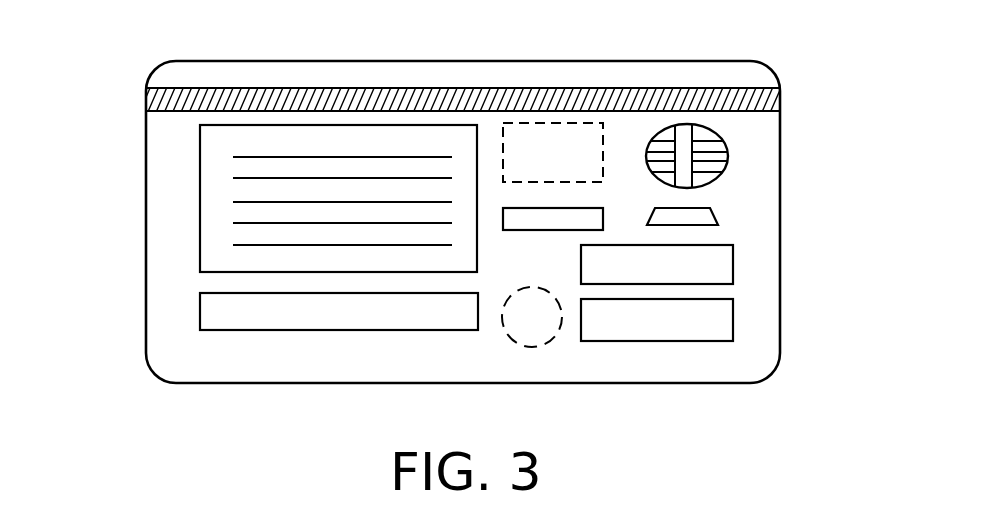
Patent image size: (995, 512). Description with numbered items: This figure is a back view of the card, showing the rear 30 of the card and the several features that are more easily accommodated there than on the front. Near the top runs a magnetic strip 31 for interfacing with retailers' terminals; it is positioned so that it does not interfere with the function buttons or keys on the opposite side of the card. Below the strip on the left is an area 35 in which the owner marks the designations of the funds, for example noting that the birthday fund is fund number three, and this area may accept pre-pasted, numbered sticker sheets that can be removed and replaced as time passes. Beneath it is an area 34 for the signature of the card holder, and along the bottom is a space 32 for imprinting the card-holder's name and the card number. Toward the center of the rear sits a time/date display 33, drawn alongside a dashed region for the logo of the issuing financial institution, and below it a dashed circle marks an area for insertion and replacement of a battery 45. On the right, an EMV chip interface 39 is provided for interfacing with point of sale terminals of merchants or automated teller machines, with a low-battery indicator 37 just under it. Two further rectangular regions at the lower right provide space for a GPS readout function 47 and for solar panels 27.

The rear of the card 30 is at (292, 61).
The magnetic strip 31 is at (428, 88).
The time/date display 33 is at (603, 212).
The EMV chip interface 39 is at (728, 152).
The low-battery indicator 37 is at (716, 211).
The GPS readout function 47 is at (733, 262).
The solar panels 27 is at (733, 308).
The area for insertion and replacement of a battery 45 is at (558, 333).
The area for a signature 34 is at (200, 311).
The area for marking fund designations 35 is at (200, 181).
The space for imprinting name and card number 32 is at (315, 360).